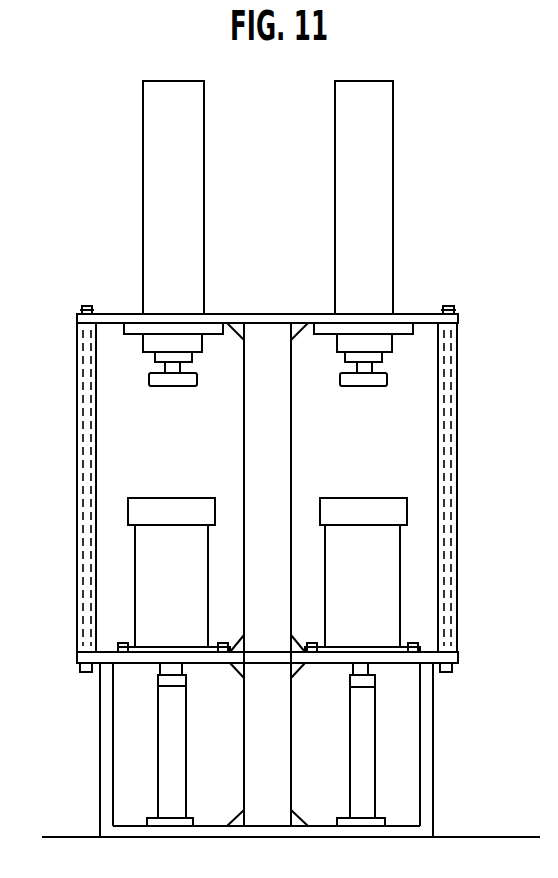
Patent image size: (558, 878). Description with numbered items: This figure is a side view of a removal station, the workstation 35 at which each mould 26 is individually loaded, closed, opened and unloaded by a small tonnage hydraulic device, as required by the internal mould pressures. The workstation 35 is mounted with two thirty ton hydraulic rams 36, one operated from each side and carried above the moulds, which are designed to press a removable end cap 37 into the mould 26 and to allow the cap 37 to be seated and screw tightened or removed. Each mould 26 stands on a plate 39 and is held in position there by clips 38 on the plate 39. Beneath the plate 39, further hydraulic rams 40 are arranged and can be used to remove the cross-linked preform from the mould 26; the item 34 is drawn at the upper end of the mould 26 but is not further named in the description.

The workstation 35 is at (472, 322).
The hydraulic rams 36 is at (360, 170).
The removable end cap 37 is at (340, 378).
The cylinder cap 34 is at (387, 498).
The mould 26 is at (135, 562).
The clips 38 is at (417, 643).
The plate 39 is at (397, 663).
The lower jacks 40 is at (157, 745).